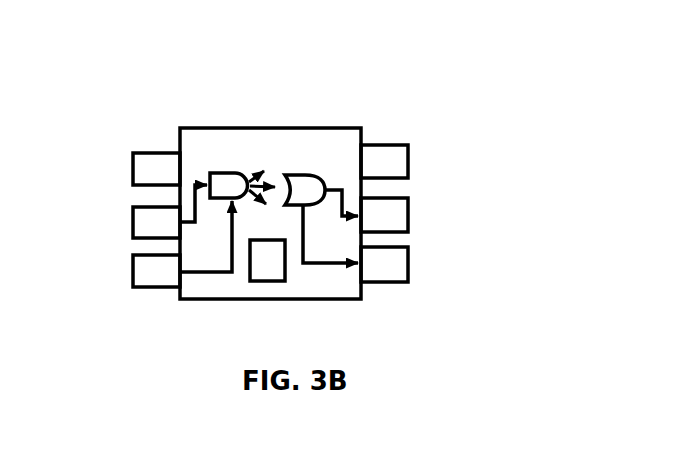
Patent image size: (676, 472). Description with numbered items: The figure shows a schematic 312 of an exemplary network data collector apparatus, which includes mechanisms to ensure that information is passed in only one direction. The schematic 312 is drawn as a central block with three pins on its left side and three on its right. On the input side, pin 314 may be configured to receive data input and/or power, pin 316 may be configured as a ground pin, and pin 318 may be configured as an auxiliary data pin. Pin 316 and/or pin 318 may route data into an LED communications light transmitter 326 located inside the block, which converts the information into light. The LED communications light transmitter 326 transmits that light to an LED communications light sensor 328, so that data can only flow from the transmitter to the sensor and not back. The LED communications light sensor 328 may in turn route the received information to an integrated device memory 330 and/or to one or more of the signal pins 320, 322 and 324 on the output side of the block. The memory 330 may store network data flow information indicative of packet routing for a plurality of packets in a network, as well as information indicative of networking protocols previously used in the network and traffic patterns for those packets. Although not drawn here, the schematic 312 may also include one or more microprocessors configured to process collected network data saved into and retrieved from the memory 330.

The schematic 312 is at (522, 115).
The pin 314 is at (131, 168).
The ground pin 316 is at (131, 220).
The auxiliary data pin 318 is at (131, 272).
The signal pin 320 is at (411, 160).
The signal pin 322 is at (411, 215).
The signal pin 324 is at (411, 263).
The LED communications light transmitter 326 is at (237, 169).
The LED communications light sensor 328 is at (307, 170).
The integrated device memory 330 is at (265, 284).